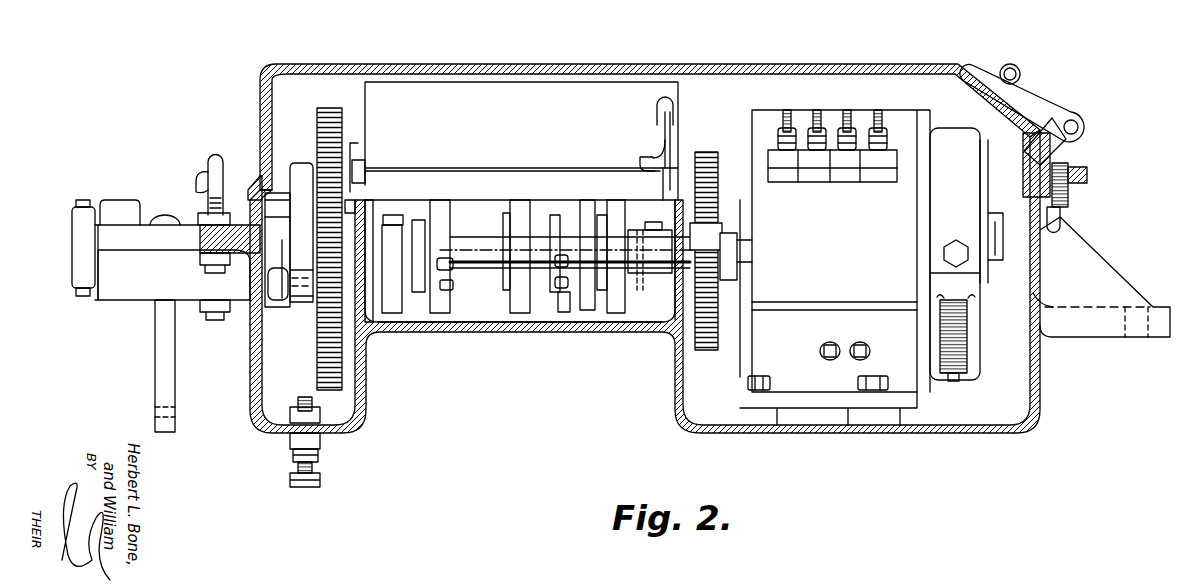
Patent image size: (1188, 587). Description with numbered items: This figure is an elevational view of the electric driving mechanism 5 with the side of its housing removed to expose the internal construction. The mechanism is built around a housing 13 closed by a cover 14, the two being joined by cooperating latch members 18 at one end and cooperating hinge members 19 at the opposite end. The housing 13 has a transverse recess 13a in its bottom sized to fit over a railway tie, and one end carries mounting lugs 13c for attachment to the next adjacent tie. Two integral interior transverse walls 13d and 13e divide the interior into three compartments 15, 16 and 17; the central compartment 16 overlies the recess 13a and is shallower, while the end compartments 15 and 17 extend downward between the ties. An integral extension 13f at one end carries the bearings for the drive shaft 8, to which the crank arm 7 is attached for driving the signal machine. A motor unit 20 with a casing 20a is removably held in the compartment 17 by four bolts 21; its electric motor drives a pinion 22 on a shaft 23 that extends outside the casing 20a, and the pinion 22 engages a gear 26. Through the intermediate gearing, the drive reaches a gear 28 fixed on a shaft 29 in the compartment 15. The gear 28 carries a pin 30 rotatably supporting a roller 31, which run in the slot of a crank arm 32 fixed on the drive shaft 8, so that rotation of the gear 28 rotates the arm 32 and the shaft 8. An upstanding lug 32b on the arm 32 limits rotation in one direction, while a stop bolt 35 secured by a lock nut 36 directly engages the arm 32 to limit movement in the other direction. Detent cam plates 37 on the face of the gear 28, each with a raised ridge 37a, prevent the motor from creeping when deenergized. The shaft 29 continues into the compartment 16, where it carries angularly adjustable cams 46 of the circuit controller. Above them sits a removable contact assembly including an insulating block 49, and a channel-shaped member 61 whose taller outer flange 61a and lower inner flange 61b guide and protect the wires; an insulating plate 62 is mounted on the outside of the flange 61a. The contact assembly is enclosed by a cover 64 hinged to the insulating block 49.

The electric driving mechanism 5 is at (712, 38).
The crank arm 7 is at (156, 338).
The drive shaft 8 is at (72, 235).
The housing 13 is at (828, 433).
The transverse recess 13a is at (366, 380).
The mounting lugs 13c is at (1108, 330).
The interior transverse wall 13d is at (368, 296).
The interior transverse wall 13e is at (677, 297).
The integral extension 13f is at (112, 288).
The cover 14 is at (791, 64).
The compartment 15 is at (294, 382).
The compartment 16 is at (494, 302).
The compartment 17 is at (714, 390).
The latch members 18 is at (1072, 174).
The hinge members 19 is at (206, 165).
The motor unit 20 is at (985, 374).
The casing 20a is at (903, 121).
The bolts 21 is at (858, 383).
The pinion 22 is at (701, 240).
The shaft 23 is at (741, 250).
The gear 26 is at (706, 153).
The gear 28 is at (340, 384).
The shaft 29 is at (484, 248).
The pin 30 is at (283, 263).
The roller 31 is at (289, 300).
The crank arm 32 is at (304, 300).
The upstanding lug 32b is at (302, 168).
The stop bolt 35 is at (299, 403).
The lock nut 36 is at (318, 455).
The detent cam plates 37 is at (349, 148).
The raised ridge 37a is at (348, 178).
The cams 46 is at (447, 313).
The insulating block 49 is at (490, 161).
The channel-shaped member 61 is at (651, 162).
The outer flange 61a is at (658, 111).
The inner flange 61b is at (636, 163).
The insulating plate 62 is at (679, 109).
The cover 64 is at (377, 93).